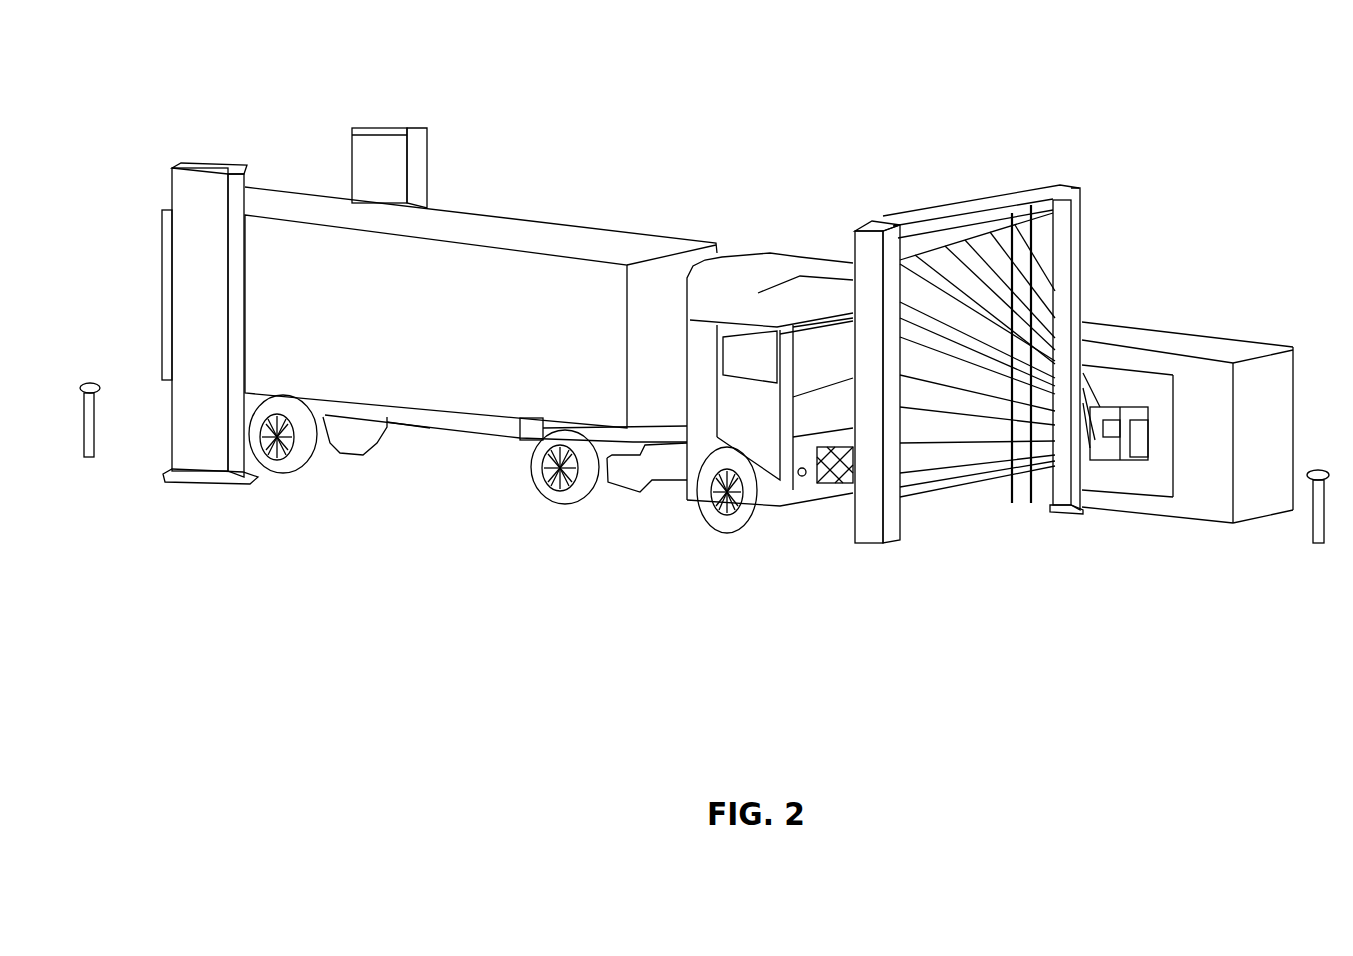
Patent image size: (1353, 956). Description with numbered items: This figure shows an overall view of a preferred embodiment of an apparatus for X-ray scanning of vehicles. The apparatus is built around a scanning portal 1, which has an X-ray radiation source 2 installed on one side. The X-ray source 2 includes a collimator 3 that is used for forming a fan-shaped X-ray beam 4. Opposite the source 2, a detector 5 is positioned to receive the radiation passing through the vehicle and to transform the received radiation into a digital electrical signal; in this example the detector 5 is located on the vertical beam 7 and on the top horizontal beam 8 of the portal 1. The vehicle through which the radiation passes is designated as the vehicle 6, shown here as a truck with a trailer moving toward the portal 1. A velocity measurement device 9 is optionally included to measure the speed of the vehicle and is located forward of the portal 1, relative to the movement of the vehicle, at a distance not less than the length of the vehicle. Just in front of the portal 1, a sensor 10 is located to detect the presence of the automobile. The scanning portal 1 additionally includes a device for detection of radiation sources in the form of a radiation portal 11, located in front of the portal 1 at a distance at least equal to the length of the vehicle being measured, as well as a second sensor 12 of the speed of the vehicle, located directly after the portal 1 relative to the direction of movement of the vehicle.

The portal 1 is at (1063, 273).
The X-ray radiation source 2 is at (1133, 433).
The collimator 3 is at (1100, 407).
The fan-shaped X-ray beam 4 is at (983, 293).
The detector 5 is at (897, 468).
The vehicle 6 is at (383, 340).
The vertical beam 7 is at (873, 493).
The top horizontal beam 8 is at (970, 203).
The velocity measurement device 9 is at (90, 432).
The sensor 10 is at (1013, 453).
The radiation portal 11 is at (203, 337).
The second sensor 12 is at (1318, 520).